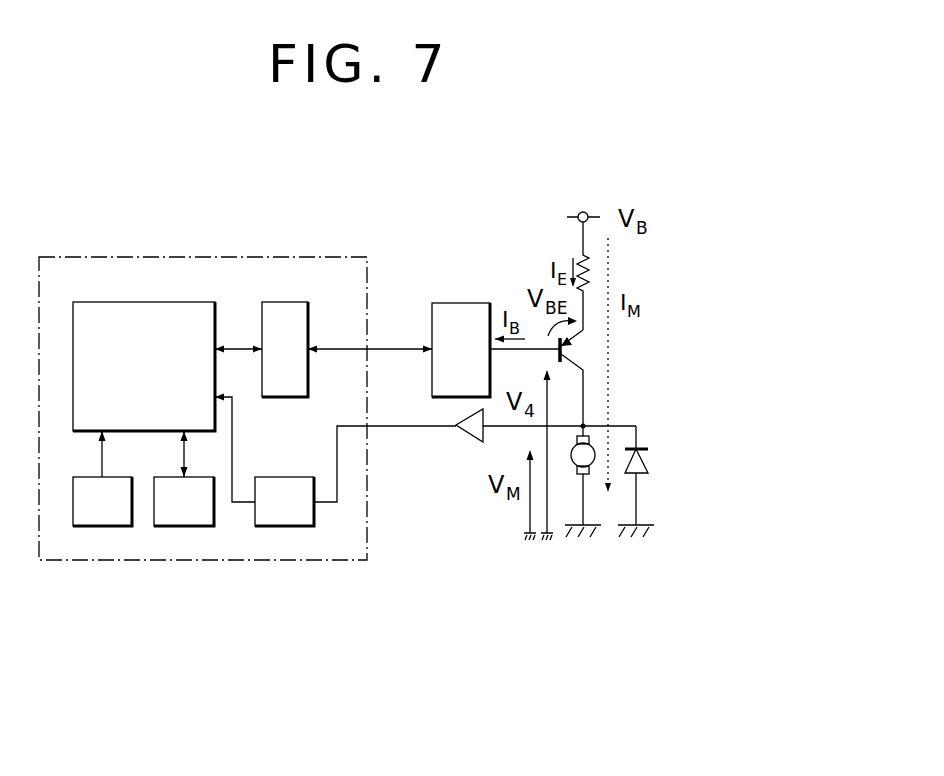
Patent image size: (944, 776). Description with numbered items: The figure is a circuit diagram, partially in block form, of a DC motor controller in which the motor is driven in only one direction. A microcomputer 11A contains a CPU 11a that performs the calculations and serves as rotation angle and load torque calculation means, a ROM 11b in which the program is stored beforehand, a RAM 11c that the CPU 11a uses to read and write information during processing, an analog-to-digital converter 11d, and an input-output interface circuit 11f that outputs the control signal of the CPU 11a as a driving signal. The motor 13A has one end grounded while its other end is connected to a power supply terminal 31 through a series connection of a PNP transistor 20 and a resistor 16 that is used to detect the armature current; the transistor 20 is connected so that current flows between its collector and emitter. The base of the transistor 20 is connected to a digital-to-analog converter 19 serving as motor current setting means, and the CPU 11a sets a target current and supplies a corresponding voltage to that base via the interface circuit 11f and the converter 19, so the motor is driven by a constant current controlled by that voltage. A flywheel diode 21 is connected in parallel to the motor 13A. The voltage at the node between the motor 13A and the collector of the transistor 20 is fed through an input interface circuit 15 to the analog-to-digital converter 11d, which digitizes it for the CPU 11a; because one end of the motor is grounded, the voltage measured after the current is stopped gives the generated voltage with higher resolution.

The microcomputer 11A is at (221, 257).
The CPU 11a is at (145, 302).
The ROM 11b is at (103, 527).
The RAM 11c is at (184, 527).
The analog-to-digital converter 11d is at (283, 527).
The input-output interface circuit 11f is at (285, 302).
The digital-to-analog converter 19 is at (462, 303).
The input interface circuit 15 is at (474, 442).
The power supply terminal 31 is at (584, 212).
The resistor 16 is at (592, 272).
The PNP transistor 20 is at (578, 351).
The motor 13A is at (596, 448).
The flywheel diode 21 is at (651, 461).